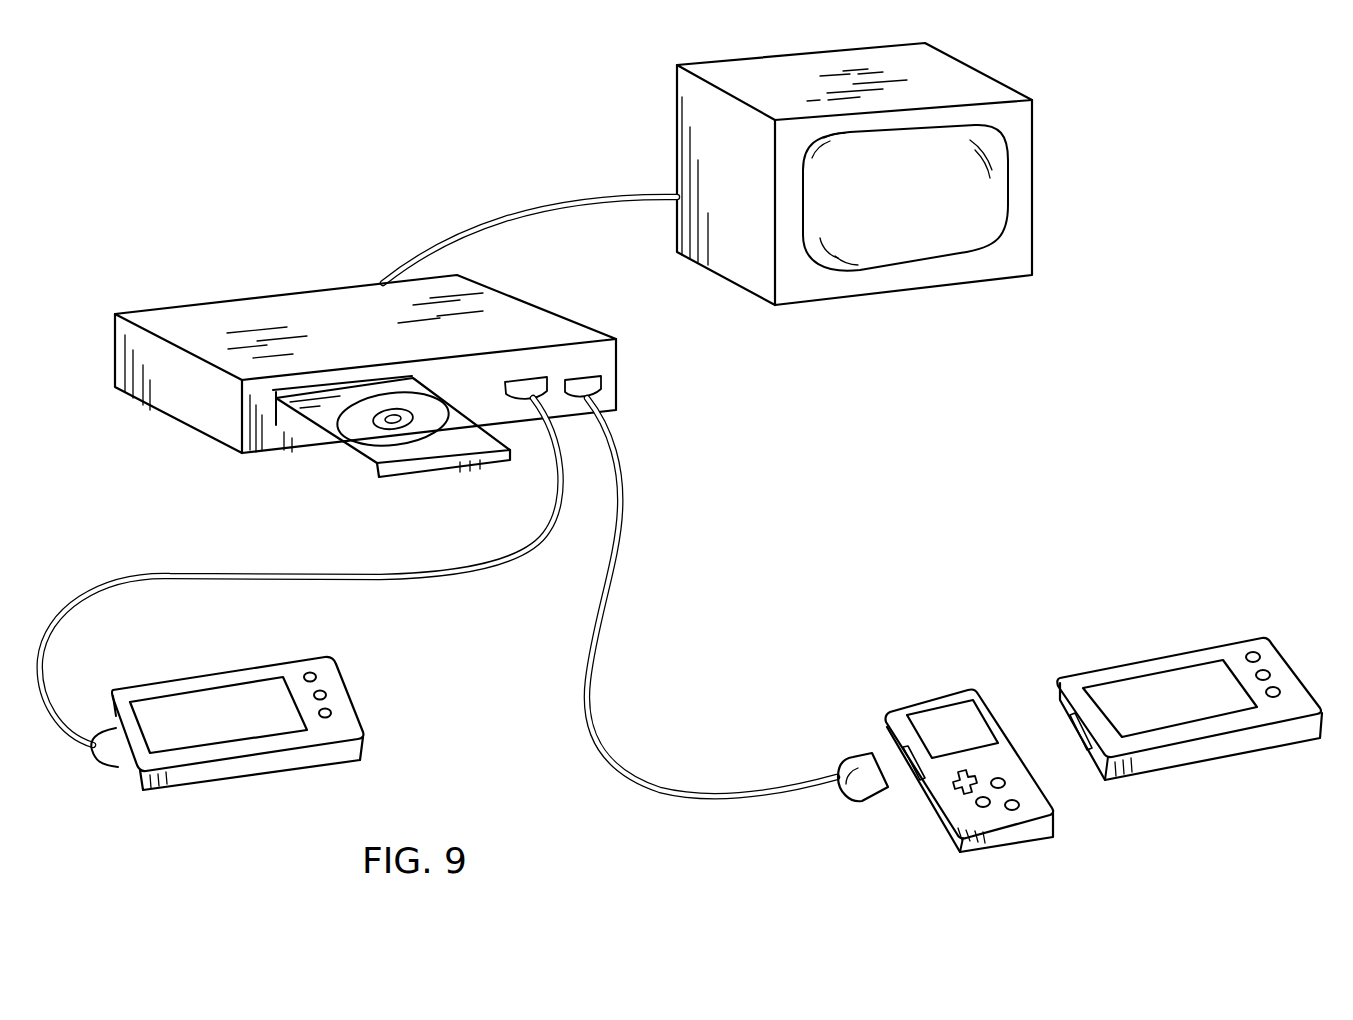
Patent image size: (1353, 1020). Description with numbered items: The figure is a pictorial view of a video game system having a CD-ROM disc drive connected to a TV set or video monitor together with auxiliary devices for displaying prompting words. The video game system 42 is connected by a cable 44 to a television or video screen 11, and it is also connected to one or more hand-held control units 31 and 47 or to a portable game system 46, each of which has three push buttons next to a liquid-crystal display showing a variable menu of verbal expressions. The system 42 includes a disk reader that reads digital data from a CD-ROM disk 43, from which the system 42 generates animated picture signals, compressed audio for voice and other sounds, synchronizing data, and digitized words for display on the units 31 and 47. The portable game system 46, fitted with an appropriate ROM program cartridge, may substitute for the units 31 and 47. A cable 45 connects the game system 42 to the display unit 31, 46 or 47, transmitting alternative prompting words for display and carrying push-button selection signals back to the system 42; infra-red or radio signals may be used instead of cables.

The television or video screen 11 is at (980, 210).
The hand-held control unit 31 is at (247, 672).
The video game system 42 is at (545, 323).
The CD-ROM disk 43 is at (365, 427).
The cable 44 is at (493, 217).
The cable 45 is at (598, 728).
The portable game system 46 is at (1020, 837).
The hand-held control unit 47 is at (1245, 740).